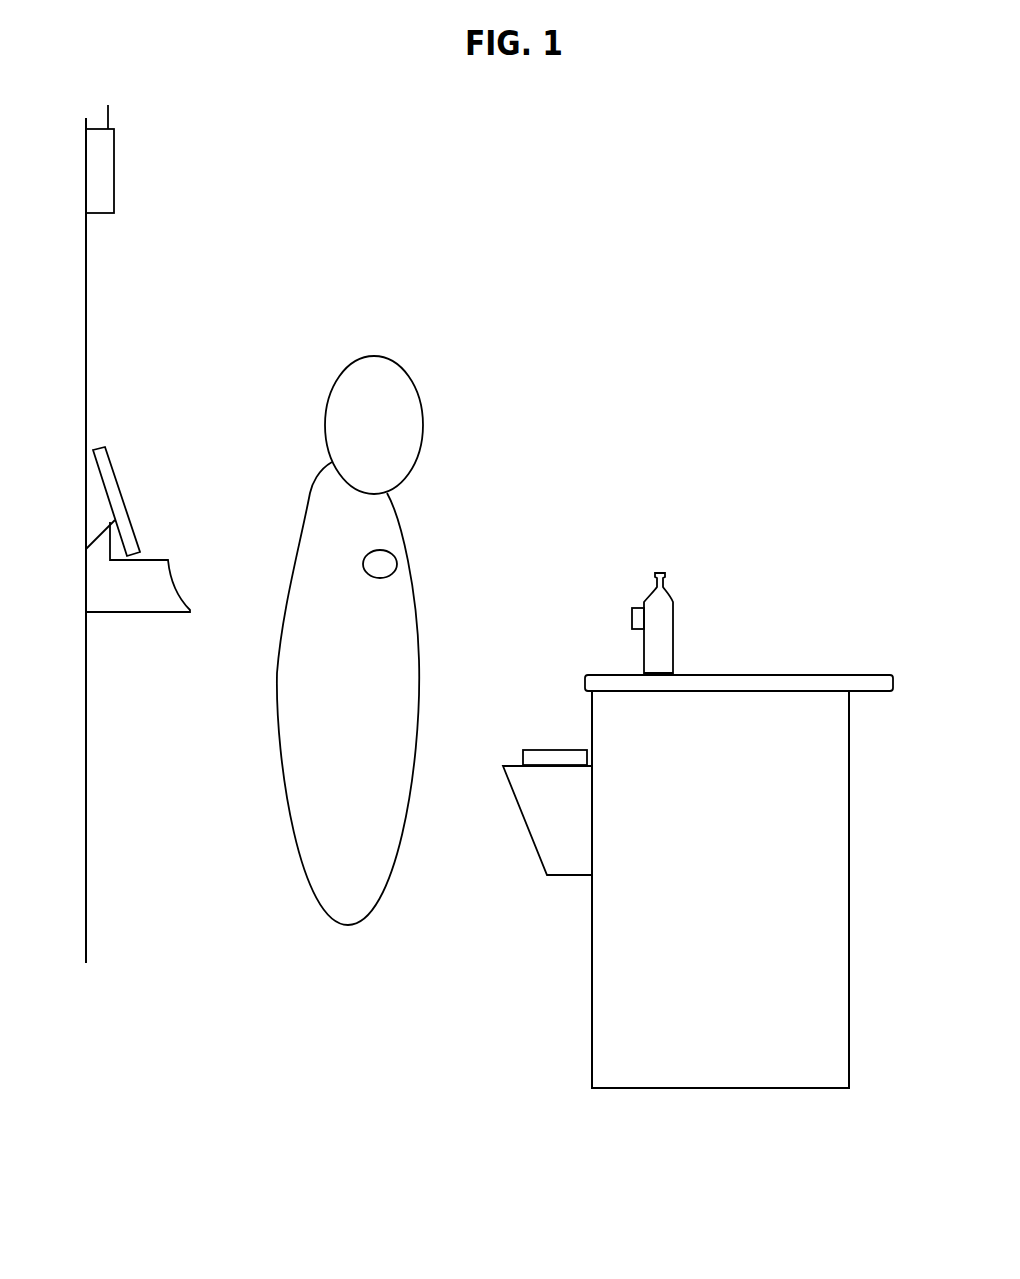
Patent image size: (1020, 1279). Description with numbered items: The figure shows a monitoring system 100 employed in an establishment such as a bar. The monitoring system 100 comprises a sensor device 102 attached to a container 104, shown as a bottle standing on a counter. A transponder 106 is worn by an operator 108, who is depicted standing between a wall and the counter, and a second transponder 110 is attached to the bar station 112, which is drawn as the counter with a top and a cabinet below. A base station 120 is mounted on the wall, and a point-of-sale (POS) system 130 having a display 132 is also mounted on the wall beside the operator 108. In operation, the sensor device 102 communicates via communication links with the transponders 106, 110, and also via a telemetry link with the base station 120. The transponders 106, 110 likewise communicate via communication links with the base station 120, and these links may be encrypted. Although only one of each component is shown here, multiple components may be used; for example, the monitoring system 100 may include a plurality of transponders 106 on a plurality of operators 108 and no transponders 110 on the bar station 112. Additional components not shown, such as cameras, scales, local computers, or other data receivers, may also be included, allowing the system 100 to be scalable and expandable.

The monitoring system 100 is at (761, 247).
The sensor device 102 is at (642, 603).
The container 104 is at (663, 622).
The transponder 106 is at (385, 565).
The operator 108 is at (317, 515).
The transponder 110 is at (535, 747).
The bar station 112 is at (631, 883).
The base station 120 is at (114, 184).
The point-of-sale (POS) system 130 is at (115, 595).
The display 132 is at (118, 480).